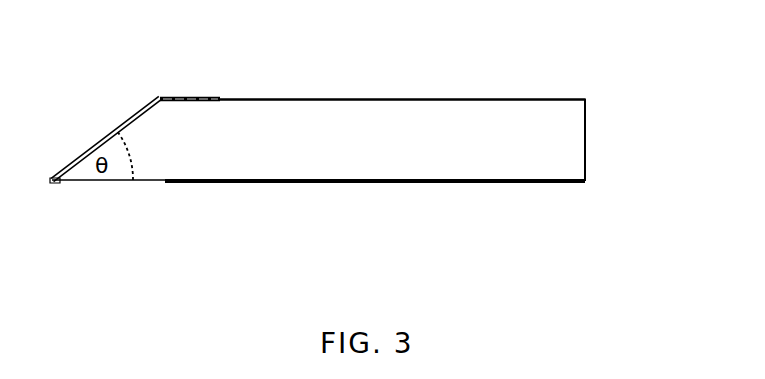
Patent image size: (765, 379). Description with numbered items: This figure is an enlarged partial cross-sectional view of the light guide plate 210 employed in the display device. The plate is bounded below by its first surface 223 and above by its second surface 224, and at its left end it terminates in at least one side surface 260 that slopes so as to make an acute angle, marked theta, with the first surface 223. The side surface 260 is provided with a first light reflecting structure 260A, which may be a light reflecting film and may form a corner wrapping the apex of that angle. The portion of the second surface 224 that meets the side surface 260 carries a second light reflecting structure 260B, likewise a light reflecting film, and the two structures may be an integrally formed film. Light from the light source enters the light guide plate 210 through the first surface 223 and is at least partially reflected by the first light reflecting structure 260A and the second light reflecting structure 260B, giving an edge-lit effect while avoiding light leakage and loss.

The light guide plate 210 is at (558, 151).
The first surface 223 is at (422, 183).
The second surface 224 is at (457, 98).
The side surface 260 is at (137, 97).
The first light reflecting structure 260A is at (94, 148).
The second light reflecting structure 260B is at (207, 95).